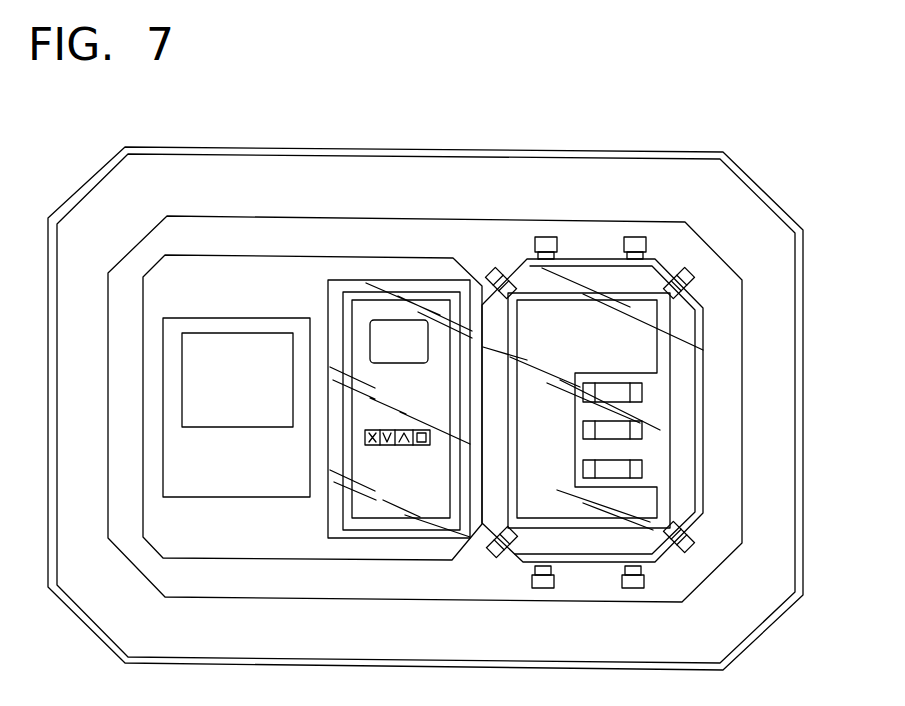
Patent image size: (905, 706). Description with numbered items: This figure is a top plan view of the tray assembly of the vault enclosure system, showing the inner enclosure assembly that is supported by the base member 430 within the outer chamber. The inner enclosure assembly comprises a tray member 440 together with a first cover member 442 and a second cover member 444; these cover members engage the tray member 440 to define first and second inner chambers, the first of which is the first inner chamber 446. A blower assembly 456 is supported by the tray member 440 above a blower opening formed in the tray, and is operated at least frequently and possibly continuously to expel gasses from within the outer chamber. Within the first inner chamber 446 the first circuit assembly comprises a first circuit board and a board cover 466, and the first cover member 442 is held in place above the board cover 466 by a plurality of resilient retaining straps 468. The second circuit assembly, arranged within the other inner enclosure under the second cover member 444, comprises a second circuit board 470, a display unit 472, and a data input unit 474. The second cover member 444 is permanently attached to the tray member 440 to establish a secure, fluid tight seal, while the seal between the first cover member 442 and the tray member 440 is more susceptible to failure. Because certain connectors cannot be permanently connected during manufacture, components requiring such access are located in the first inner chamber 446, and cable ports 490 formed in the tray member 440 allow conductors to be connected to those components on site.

The base member 430 is at (477, 153).
The tray member 440 is at (375, 183).
The first cover member 442 is at (688, 322).
The second cover member 444 is at (375, 307).
The first inner chamber 446 is at (650, 407).
The blower assembly 456 is at (230, 348).
The board cover 466 is at (647, 357).
The resilient retaining straps 468 is at (493, 275).
The second circuit board 470 is at (366, 409).
The display unit 472 is at (378, 333).
The data input unit 474 is at (378, 448).
The cable ports 490 is at (630, 240).